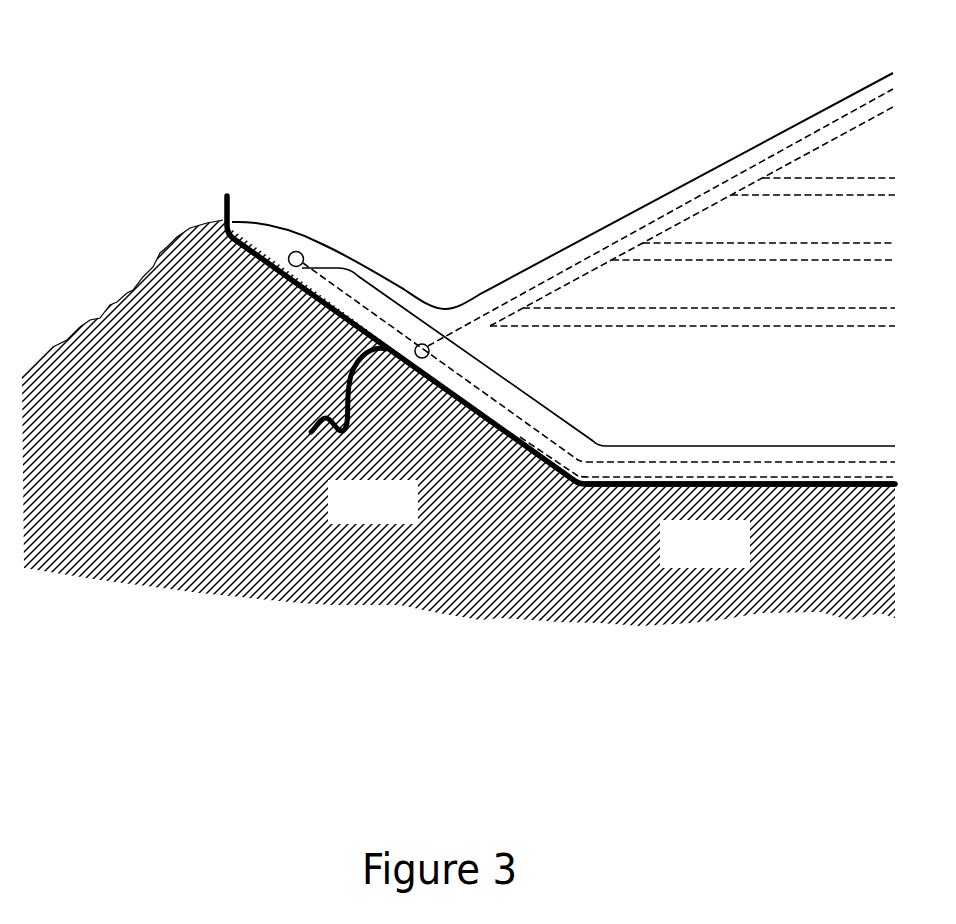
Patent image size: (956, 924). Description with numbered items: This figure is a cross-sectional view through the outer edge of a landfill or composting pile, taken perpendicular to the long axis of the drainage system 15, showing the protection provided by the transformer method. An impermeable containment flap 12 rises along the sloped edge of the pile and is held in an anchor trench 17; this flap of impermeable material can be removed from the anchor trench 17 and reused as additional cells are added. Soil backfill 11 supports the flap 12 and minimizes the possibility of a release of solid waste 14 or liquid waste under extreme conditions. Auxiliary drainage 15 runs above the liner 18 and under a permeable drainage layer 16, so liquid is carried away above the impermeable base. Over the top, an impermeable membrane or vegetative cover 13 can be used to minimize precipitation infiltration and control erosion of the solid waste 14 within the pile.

The soil backfill 11 is at (143, 272).
The impermeable containment flap 12 is at (230, 200).
The impermeable membrane or vegetative cover 13 is at (555, 253).
The solid waste 14 is at (818, 161).
The drainage system 15 is at (581, 278).
The permeable drainage layer 16 is at (521, 382).
The anchor trench 17 is at (343, 433).
The liner 18 is at (675, 490).